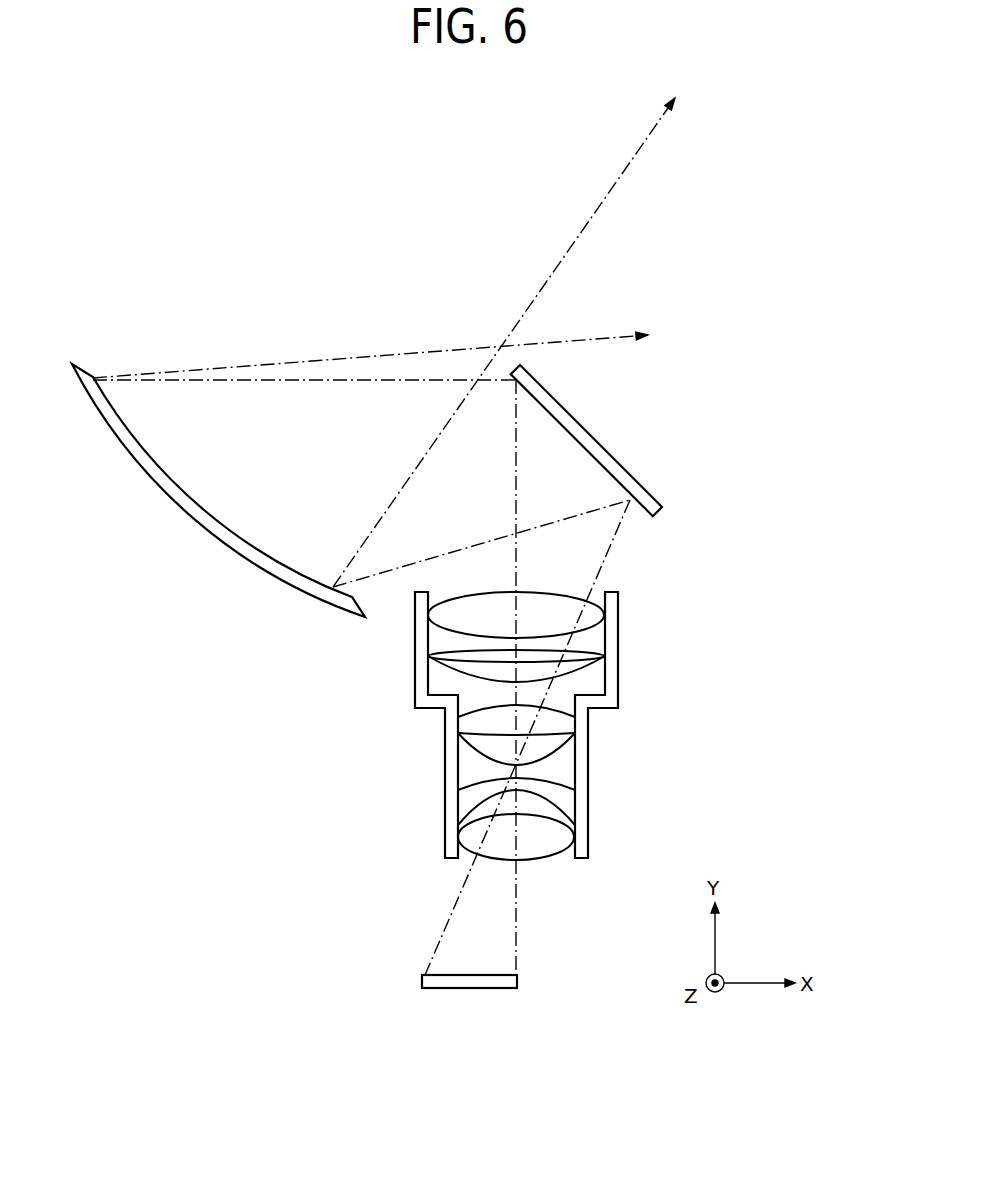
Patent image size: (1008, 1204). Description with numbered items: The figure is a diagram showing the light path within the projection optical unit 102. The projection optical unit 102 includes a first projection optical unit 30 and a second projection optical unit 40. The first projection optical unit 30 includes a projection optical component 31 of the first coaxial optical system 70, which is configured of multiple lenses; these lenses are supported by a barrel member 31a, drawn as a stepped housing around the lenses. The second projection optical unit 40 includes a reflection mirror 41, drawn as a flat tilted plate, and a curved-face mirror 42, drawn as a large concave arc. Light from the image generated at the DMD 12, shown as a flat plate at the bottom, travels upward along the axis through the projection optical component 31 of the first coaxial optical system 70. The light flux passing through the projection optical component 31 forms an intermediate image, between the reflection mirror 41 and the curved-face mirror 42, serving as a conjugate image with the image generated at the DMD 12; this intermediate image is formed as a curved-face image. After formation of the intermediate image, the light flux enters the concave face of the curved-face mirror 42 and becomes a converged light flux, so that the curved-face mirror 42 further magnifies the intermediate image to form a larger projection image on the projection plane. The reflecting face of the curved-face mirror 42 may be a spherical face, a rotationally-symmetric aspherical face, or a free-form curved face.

The DMD 12 is at (455, 990).
The first projection optical unit 30 is at (586, 727).
The projection optical component 31 is at (632, 675).
The barrel member 31a is at (620, 622).
The second projection optical unit 40 is at (441, 490).
The reflection mirror 41 is at (590, 428).
The curved-face mirror 42 is at (172, 502).
The first coaxial optical system 70 is at (403, 590).
The projection optical unit 102 is at (472, 536).